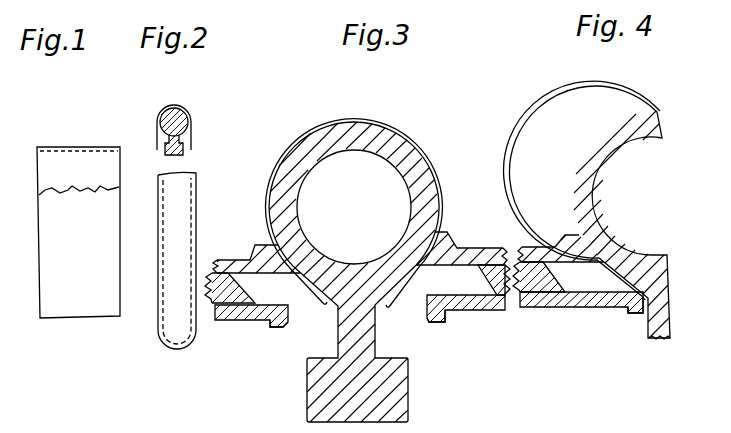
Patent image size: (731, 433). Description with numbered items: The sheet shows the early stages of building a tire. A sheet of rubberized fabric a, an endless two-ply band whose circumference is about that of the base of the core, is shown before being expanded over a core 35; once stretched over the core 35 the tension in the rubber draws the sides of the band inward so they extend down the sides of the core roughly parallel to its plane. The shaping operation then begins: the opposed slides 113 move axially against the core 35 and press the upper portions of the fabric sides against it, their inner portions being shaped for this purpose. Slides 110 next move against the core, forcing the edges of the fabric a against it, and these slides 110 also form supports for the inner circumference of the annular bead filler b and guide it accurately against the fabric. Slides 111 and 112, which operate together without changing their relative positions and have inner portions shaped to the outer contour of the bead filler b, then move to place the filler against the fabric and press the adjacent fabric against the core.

In FIG. 1, the sheet of rubberized fabric a is at (58, 147).
In FIG. 2, the sheet of rubberized fabric a is at (178, 175).
In FIG. 3, the sheet of rubberized fabric a is at (268, 175).
In FIG. 4, the sheet of rubberized fabric a is at (586, 150).
In FIG. 2, the core 35 is at (187, 119).
In FIG. 3, the core 35 is at (297, 183).
In FIG. 4, the core 35 is at (600, 183).
In FIG. 3, the bead filler b is at (243, 296).
In FIG. 4, the bead filler b is at (550, 280).
In FIG. 3, the slides 110 is at (280, 326).
In FIG. 4, the slides 110 is at (640, 314).
In FIG. 3, the slide 111 is at (215, 302).
In FIG. 4, the slide 111 is at (535, 298).
In FIG. 3, the slide 112 is at (235, 262).
In FIG. 4, the slide 112 is at (527, 266).
In FIG. 3, the slides 113 is at (260, 246).
In FIG. 4, the slides 113 is at (573, 237).